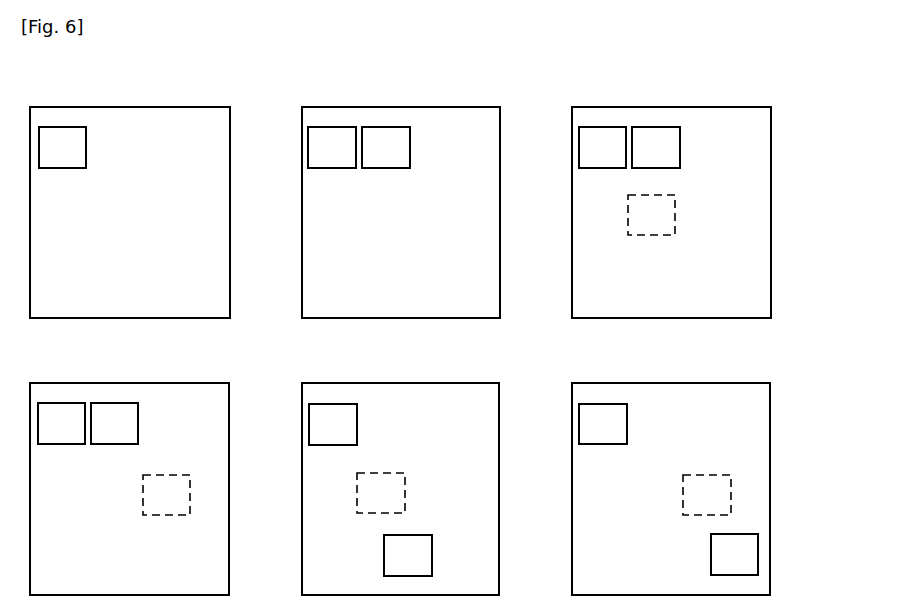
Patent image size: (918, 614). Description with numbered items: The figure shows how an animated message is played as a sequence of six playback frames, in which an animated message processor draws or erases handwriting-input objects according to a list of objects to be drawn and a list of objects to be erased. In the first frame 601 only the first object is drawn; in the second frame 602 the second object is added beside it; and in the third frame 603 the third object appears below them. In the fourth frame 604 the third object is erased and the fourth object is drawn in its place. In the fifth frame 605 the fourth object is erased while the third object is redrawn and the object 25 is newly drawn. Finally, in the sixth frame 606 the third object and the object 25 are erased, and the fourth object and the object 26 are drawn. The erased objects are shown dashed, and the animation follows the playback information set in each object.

The first frame 601 is at (128, 105).
The second frame 602 is at (399, 105).
The third frame 603 is at (669, 105).
The fourth frame 604 is at (128, 382).
The fifth frame 605 is at (399, 382).
The sixth frame 606 is at (668, 382).
The object 25 is at (408, 555).
The object 26 is at (734, 554).